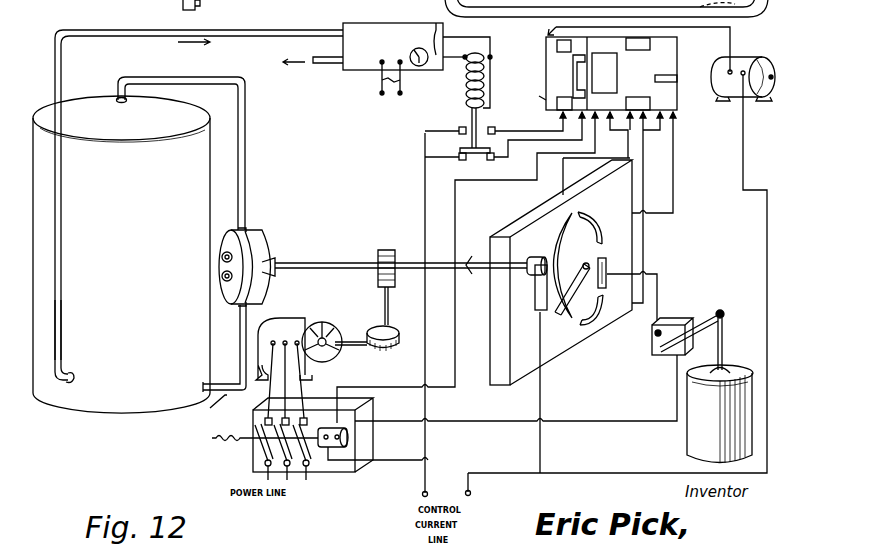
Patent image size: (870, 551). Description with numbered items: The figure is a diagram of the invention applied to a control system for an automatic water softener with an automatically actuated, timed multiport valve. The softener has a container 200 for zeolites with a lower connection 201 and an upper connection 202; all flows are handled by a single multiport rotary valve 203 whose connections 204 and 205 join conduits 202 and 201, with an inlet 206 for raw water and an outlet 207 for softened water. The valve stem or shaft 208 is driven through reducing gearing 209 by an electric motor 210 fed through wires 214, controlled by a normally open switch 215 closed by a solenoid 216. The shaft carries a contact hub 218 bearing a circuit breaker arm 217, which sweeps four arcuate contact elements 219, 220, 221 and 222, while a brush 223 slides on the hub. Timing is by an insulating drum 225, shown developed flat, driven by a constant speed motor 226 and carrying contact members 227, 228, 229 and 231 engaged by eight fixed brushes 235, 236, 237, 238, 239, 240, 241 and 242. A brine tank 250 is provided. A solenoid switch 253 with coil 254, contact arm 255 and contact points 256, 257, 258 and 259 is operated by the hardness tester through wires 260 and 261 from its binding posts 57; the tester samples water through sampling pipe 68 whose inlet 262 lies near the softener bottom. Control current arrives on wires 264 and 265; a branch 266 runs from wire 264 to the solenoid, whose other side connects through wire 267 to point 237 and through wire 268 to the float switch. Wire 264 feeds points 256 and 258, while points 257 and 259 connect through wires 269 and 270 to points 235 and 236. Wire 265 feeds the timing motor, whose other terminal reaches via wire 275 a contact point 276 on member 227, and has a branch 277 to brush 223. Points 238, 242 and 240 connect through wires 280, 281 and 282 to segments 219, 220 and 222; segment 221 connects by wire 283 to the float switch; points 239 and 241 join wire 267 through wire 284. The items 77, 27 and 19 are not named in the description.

The valve fitting 77 is at (200, 3).
The binding posts 57 is at (437, 23).
The waste pipe 27 is at (323, 52).
The line terminals 19 is at (381, 80).
The upper connection 202 is at (122, 78).
The container 200 is at (210, 145).
The connection 204 is at (245, 230).
The multiport rotary valve 203 is at (262, 240).
The inlet 206 is at (221, 257).
The connection 205 is at (262, 297).
The stem or shaft 208 is at (345, 265).
The outlet 207 is at (222, 278).
The sampling pipe 68 is at (62, 332).
The sampling pipe inlet 262 is at (75, 378).
The lower connection 201 is at (212, 410).
The electric motor 210 is at (330, 322).
The reducing gearing 209 is at (388, 300).
The wire 264 is at (385, 351).
The wire 267 is at (455, 195).
The wires 214 is at (305, 400).
The solenoid 216 is at (347, 437).
The normally open switch 215 is at (315, 462).
The branch 266 is at (398, 472).
The wire 265 is at (468, 485).
The wire 268 is at (470, 421).
The wire 261 is at (478, 42).
The wire 260 is at (468, 60).
The coil 254 is at (466, 76).
The solenoid switch 253 is at (472, 118).
The contact point 256 is at (459, 128).
The contact point 257 is at (492, 127).
The contact point 258 is at (470, 150).
The contact arm 255 is at (462, 160).
The contact point 259 is at (492, 160).
The wire 270 is at (538, 134).
The wire 269 is at (535, 131).
The contact member 228 is at (596, 80).
The contact member 229 is at (638, 74).
The contact member 227 is at (547, 48).
The fixed brush 235 is at (560, 110).
The contact point 276 is at (568, 27).
The wire 275 is at (738, 55).
The contact member 231 is at (728, 70).
The insulating drum 225 is at (726, 80).
The constant speed motor 226 is at (765, 105).
The fixed brush 242 is at (678, 110).
The fixed brush 241 is at (662, 122).
The fixed brush 240 is at (645, 135).
The fixed brush 239 is at (632, 140).
The wire 284 is at (612, 150).
The fixed brush 238 is at (598, 150).
The fixed brush 237 is at (584, 150).
The fixed brush 236 is at (565, 150).
The wire 280 is at (570, 180).
The contact hub 218 is at (535, 257).
The arcuate contact element 219 is at (556, 235).
The arcuate contact element 220 is at (592, 215).
The circuit breaker arm 217 is at (582, 255).
The arcuate contact element 221 is at (606, 283).
The brush 223 is at (545, 305).
The arcuate contact element 222 is at (590, 318).
The branch 277 is at (540, 385).
The wire 281 is at (676, 213).
The wire 282 is at (644, 237).
The wire 283 is at (658, 278).
The brine tank 250 is at (690, 428).